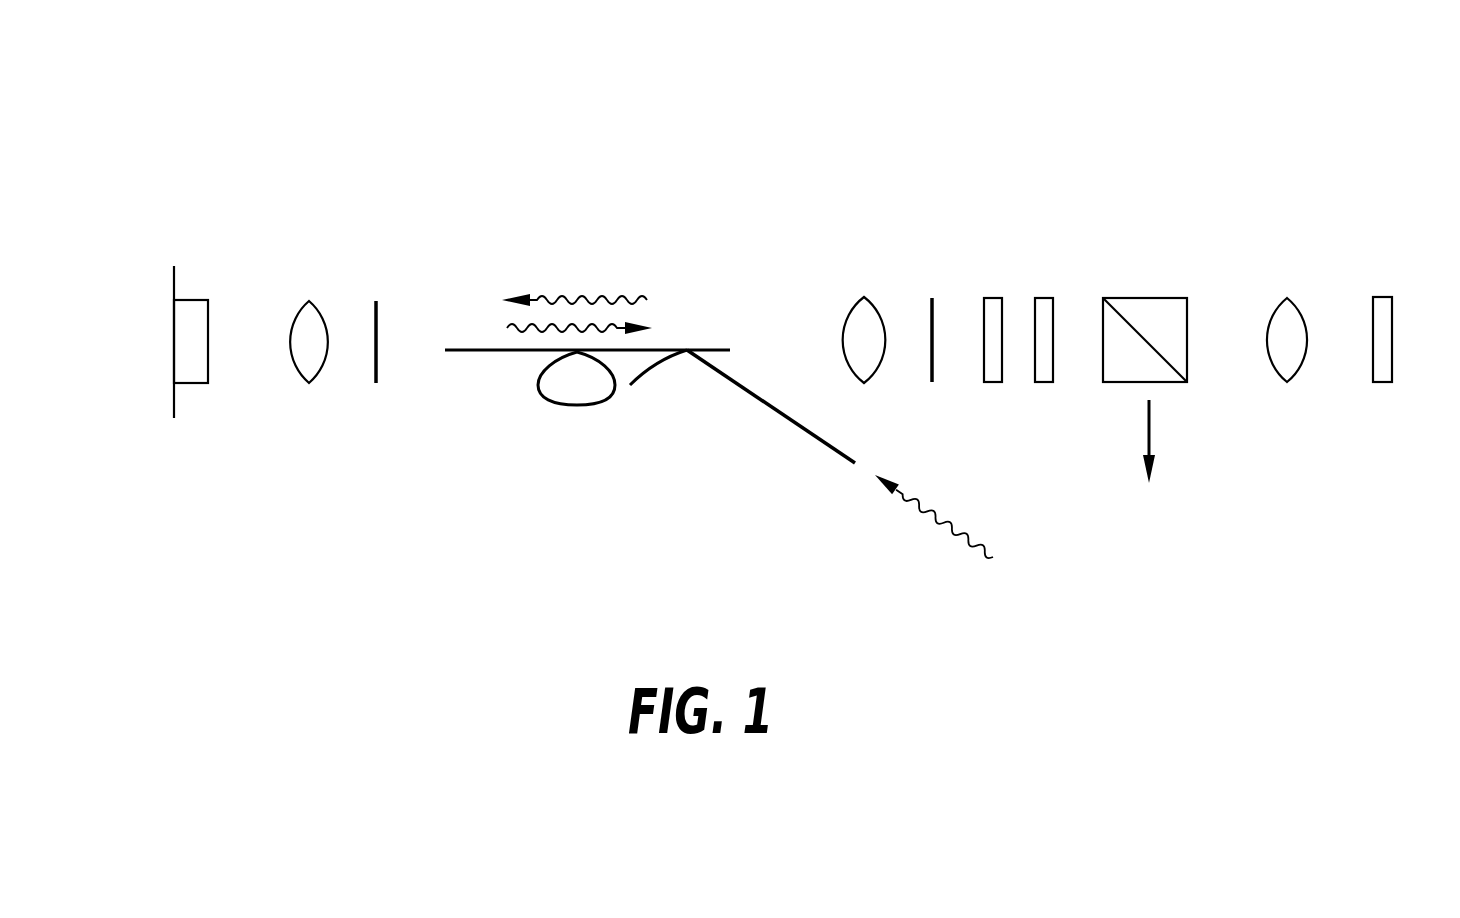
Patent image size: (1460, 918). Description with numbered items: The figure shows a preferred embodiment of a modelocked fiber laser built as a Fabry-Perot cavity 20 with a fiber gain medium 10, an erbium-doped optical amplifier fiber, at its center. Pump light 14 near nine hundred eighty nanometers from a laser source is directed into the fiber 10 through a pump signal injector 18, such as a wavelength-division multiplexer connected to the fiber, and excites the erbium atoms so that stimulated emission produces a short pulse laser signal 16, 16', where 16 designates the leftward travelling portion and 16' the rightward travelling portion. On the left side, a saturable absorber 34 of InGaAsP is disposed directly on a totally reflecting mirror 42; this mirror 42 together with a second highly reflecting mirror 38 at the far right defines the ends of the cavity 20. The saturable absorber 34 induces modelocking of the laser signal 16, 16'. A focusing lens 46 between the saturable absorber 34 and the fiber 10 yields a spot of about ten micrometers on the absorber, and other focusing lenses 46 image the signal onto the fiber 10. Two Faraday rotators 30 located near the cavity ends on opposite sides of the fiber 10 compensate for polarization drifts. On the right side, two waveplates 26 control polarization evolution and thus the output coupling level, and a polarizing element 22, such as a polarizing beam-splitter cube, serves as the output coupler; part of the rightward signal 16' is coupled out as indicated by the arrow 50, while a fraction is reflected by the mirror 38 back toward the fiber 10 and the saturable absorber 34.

The fiber gain medium 10 is at (548, 406).
The pump light 14 is at (942, 532).
The leftward travelling laser signal 16 is at (574, 267).
The rightward travelling laser signal 16' is at (615, 304).
The pump signal injector 18 is at (778, 412).
The cavity 20 is at (969, 73).
The polarizing element 22 is at (1130, 298).
The waveplates 26 is at (1043, 298).
The Faraday rotators 30 is at (375, 308).
The saturable absorber 34 is at (193, 298).
The highly reflecting mirror 38 is at (1382, 383).
The totally reflecting mirror 42 is at (173, 400).
The focusing lens 46 is at (302, 373).
The output coupling arrow 50 is at (1152, 417).